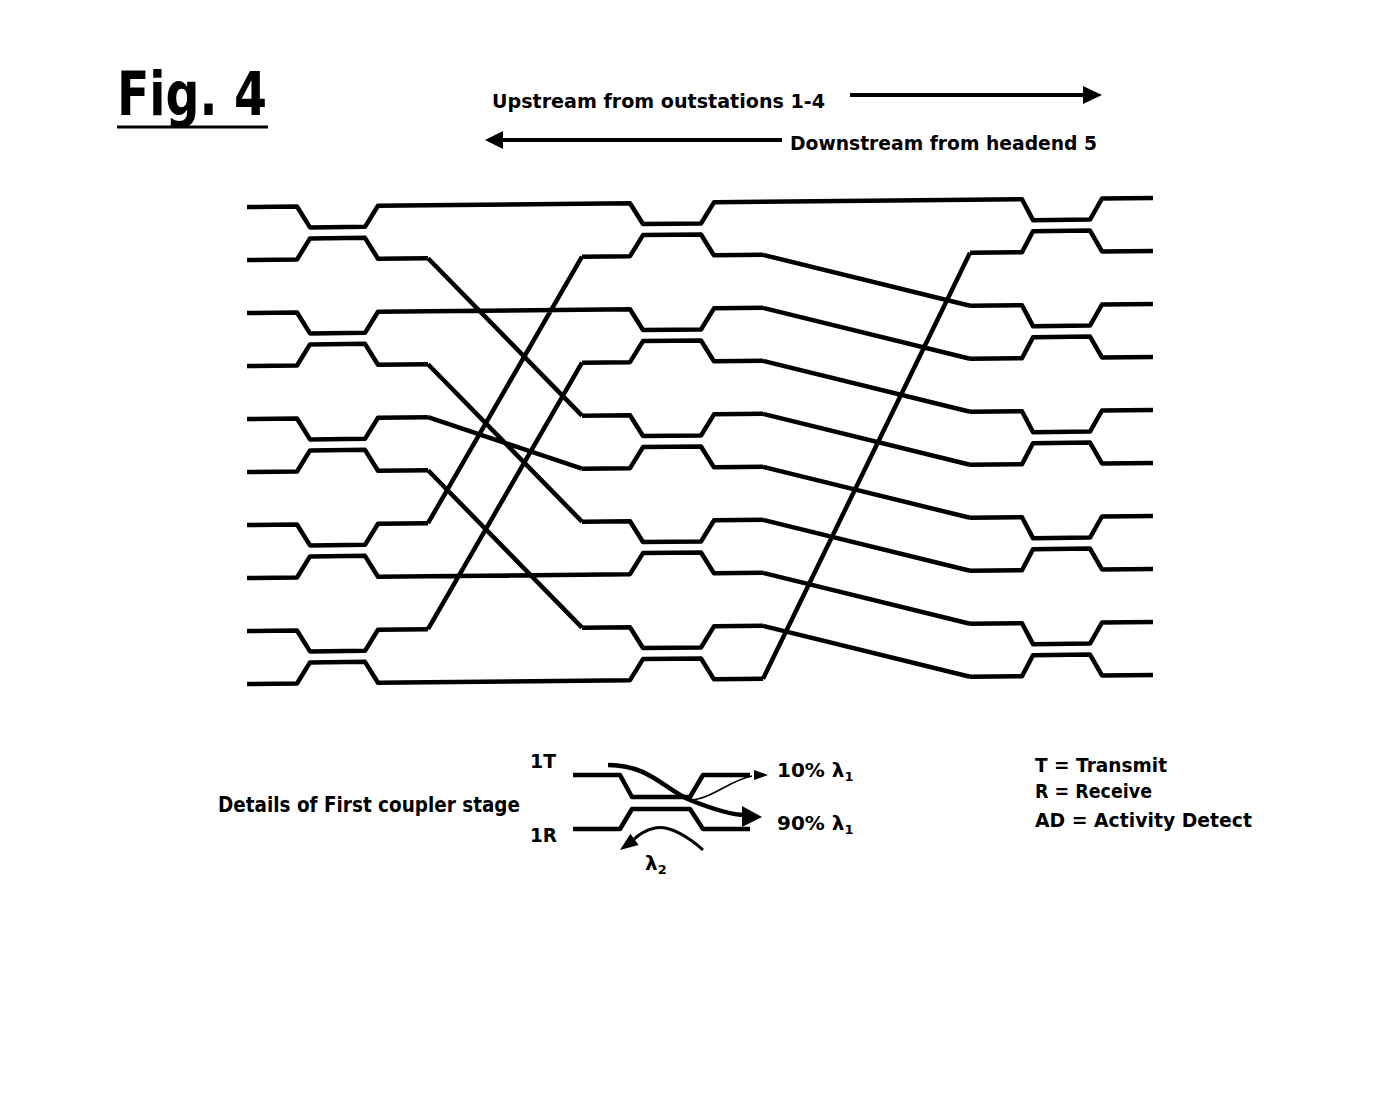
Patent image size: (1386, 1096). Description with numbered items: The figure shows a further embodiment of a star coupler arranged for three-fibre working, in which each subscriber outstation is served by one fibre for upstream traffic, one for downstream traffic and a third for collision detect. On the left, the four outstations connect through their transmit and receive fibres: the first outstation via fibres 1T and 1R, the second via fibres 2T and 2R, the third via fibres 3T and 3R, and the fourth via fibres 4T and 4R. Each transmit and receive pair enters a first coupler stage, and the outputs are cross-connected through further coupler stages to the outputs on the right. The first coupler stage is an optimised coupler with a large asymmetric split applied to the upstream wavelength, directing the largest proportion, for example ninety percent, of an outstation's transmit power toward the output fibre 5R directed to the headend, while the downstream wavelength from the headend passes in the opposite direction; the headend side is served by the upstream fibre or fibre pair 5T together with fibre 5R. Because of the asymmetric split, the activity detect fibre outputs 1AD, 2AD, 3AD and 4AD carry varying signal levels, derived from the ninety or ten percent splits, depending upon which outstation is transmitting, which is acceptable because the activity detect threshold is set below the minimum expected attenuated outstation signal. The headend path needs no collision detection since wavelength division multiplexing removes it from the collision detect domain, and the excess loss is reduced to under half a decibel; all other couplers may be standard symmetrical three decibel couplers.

The outstation 1 transmit fibre 1T is at (323, 203).
The outstation 1 receive fibre 1R is at (323, 253).
The outstation 2 transmit fibre 2T is at (323, 309).
The outstation 2 receive fibre 2R is at (323, 359).
The outstation 3 transmit fibre 3T is at (323, 415).
The outstation 3 receive fibre 3R is at (323, 465).
The outstation 4 transmit fibre 4T is at (323, 526).
The outstation 4 receive fibre 4R is at (323, 571).
The activity detect fibre output for outstation 2 2AD is at (1085, 205).
The activity detect fibre output for outstation 3 3AD is at (1086, 305).
The activity detect fibre output for outstation 4 4AD is at (1086, 417).
The headend upstream fibre 5T is at (1161, 521).
The output fibre directed towards the headend 5R is at (1078, 567).
The activity detect fibre output for outstation 1 1AD is at (1086, 623).